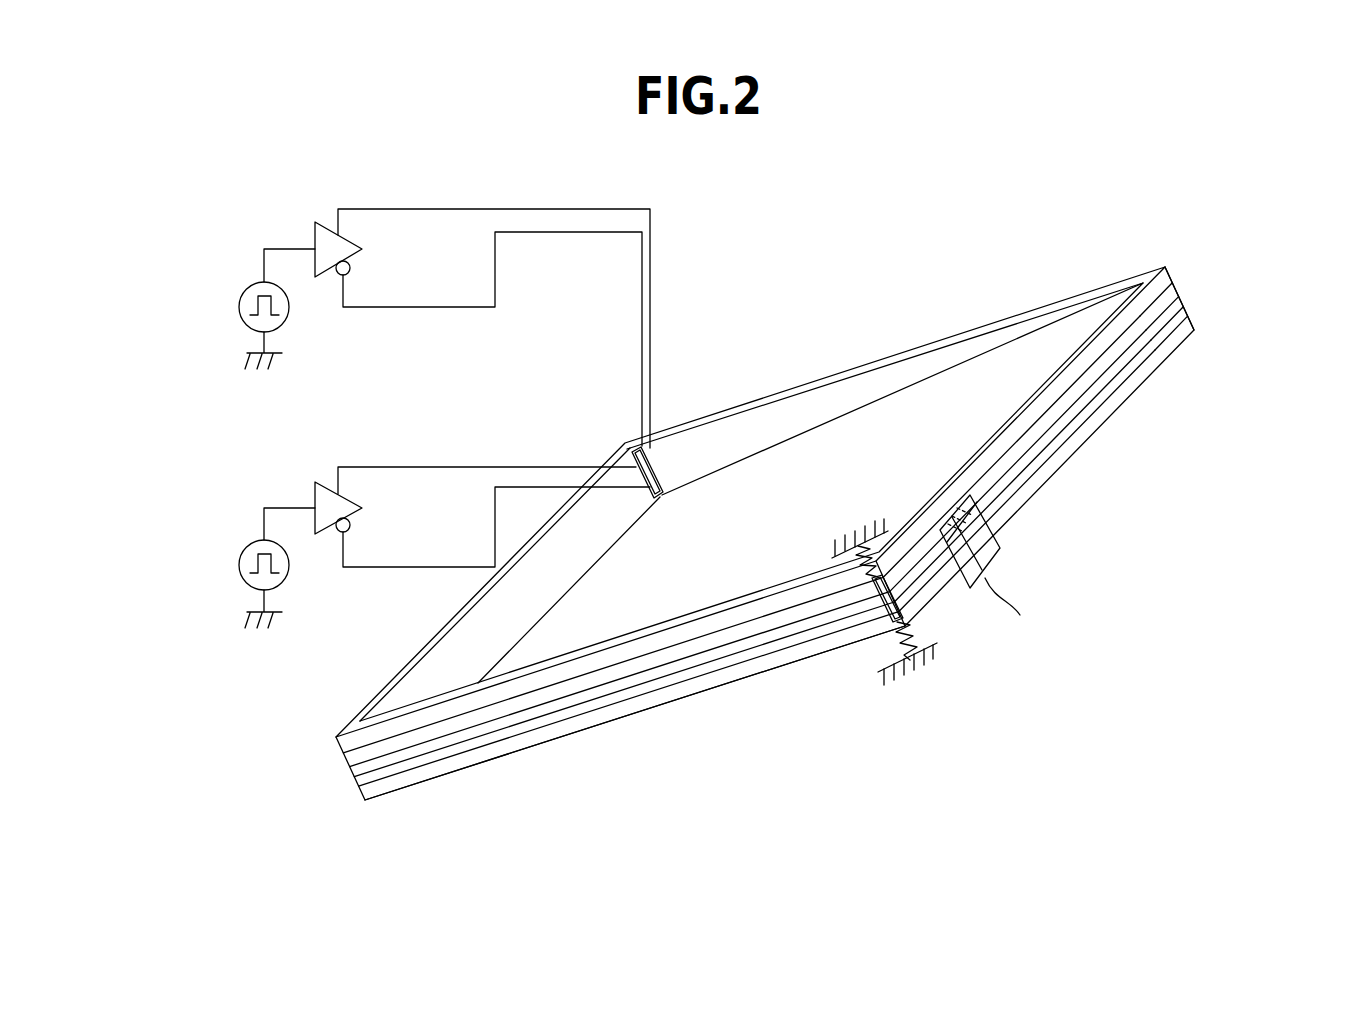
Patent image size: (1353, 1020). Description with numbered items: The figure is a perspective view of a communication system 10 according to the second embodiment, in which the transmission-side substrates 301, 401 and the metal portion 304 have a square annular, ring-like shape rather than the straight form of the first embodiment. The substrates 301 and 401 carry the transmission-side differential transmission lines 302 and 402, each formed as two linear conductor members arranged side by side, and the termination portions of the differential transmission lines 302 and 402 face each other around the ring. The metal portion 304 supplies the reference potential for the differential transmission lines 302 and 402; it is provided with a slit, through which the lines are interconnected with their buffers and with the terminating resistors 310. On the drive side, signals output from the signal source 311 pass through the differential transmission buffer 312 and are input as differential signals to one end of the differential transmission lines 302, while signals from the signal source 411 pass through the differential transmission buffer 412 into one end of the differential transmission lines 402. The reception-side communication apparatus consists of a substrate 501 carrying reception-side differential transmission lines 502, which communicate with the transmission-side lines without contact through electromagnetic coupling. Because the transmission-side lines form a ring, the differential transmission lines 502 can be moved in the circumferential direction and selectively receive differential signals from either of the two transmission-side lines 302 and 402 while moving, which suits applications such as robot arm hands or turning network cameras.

The communication system 10 is at (808, 239).
The substrate 301 is at (630, 717).
The differential transmission lines 302 is at (800, 640).
The metal portion 304 is at (1026, 340).
The terminating resistors 310 is at (908, 590).
The signal source 311 is at (240, 565).
The differential transmission buffer 312 is at (315, 494).
The substrate 401 is at (1088, 433).
The differential transmission lines 402 is at (1175, 300).
The signal source 411 is at (240, 307).
The differential transmission buffer 412 is at (315, 236).
The substrate 501 is at (1000, 548).
The differential transmission lines 502 is at (1005, 598).